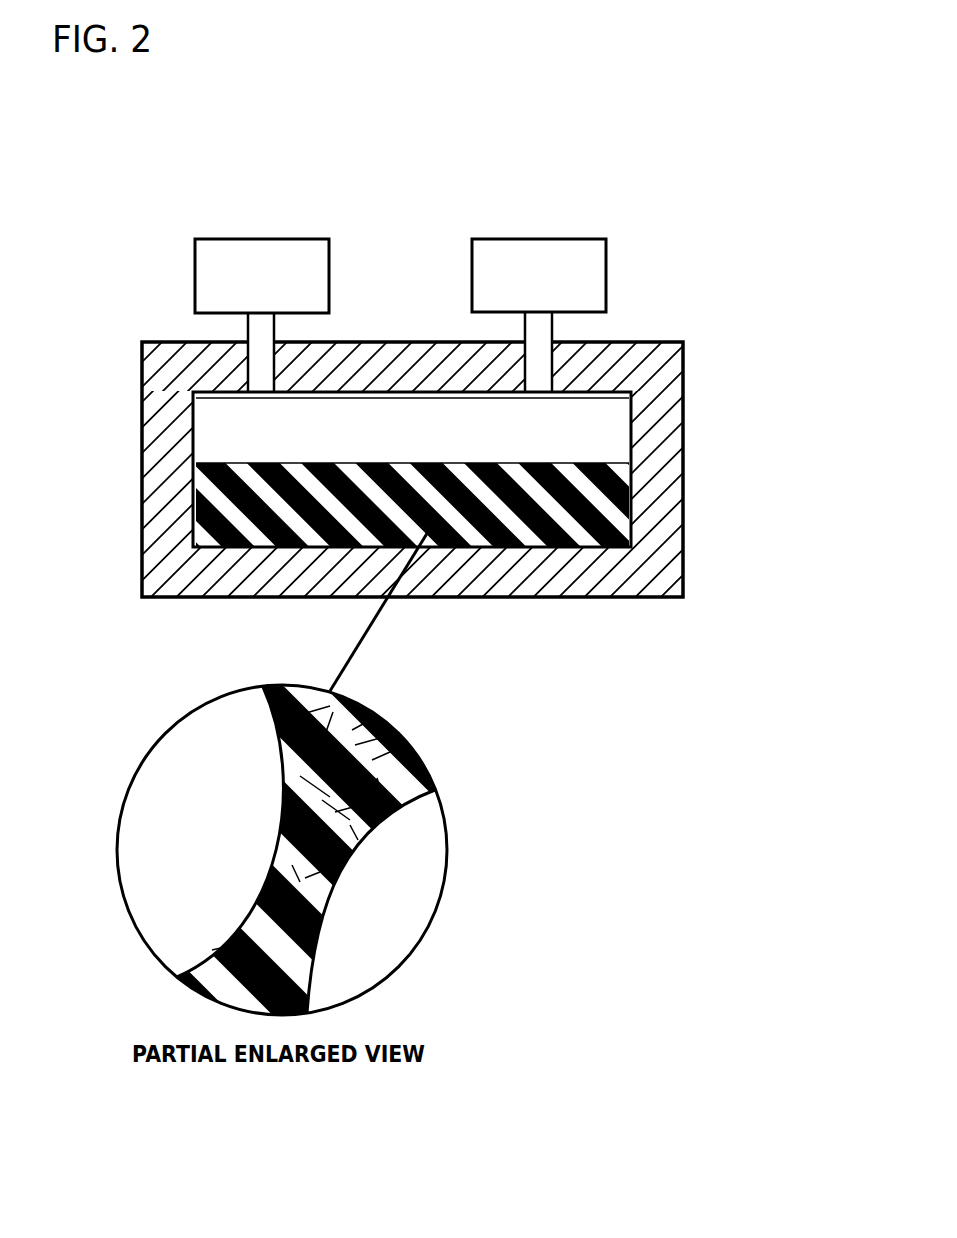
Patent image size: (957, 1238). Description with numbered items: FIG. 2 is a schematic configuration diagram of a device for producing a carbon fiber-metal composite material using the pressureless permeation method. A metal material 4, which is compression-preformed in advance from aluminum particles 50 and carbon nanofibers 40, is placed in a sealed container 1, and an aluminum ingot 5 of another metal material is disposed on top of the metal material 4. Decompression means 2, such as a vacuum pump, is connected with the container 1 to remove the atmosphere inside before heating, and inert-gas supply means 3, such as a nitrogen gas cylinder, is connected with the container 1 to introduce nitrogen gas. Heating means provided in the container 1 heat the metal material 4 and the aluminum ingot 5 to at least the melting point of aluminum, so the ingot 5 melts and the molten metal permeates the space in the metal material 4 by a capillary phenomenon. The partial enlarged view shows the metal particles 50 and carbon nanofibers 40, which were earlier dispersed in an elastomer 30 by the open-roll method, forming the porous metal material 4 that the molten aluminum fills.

The sealed container 1 is at (615, 353).
The decompression means 2 is at (252, 245).
The inert-gas supply means 3 is at (557, 245).
The metal material 4 is at (580, 488).
The aluminum ingot 5 is at (553, 433).
The elastomer 30 is at (405, 740).
The carbon nanofibers 40 is at (297, 957).
The metal particles 50 is at (400, 863).